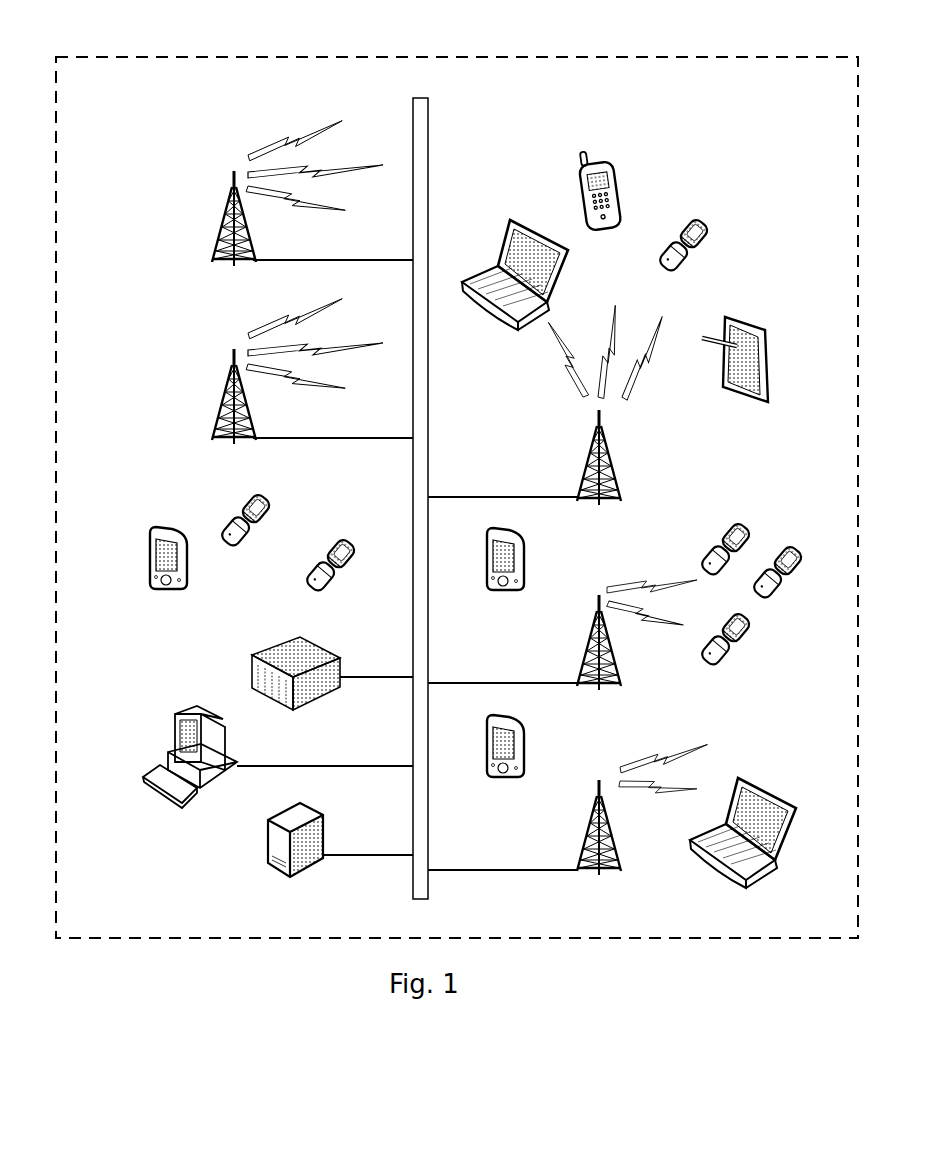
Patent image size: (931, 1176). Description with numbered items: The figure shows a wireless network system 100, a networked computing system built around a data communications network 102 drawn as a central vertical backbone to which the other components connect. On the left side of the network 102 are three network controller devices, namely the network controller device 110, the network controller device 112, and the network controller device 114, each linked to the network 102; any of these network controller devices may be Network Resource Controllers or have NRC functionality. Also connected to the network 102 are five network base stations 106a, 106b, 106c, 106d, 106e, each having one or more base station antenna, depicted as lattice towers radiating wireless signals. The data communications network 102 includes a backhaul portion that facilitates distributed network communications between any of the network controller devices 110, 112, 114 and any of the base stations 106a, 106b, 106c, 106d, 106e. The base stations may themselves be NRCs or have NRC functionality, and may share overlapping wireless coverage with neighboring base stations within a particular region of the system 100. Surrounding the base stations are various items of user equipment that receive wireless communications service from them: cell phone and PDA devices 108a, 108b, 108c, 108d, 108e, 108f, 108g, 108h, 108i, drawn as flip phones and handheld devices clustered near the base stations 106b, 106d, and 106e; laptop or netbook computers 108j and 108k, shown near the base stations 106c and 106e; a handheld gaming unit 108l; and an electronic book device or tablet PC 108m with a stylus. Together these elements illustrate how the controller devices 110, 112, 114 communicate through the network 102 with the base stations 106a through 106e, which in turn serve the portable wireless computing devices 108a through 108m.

The wireless network system 100 is at (322, 30).
The data communications network 102 is at (411, 108).
The network base station 106a is at (224, 217).
The network base station 106b is at (224, 396).
The network base station 106c is at (588, 822).
The network base station 106d is at (588, 643).
The network base station 106e is at (616, 467).
The cell phone/PDA device 108a is at (150, 550).
The cell phone/PDA device 108b is at (240, 504).
The cell phone/PDA device 108c is at (312, 590).
The cell phone/PDA device 108d is at (522, 727).
The cell phone/PDA device 108e is at (738, 660).
The cell phone/PDA device 108f is at (797, 588).
The cell phone/PDA device 108g is at (748, 528).
The cell phone/PDA device 108h is at (522, 532).
The cell phone/PDA device 108i is at (710, 232).
The laptop/netbook computer 108j is at (760, 788).
The laptop/netbook computer 108k is at (512, 222).
The handheld gaming unit 108l is at (618, 180).
The electronic book device or tablet PC 108m is at (770, 334).
The network controller device 110 is at (254, 670).
The network controller device 112 is at (176, 718).
The network controller device 114 is at (268, 858).